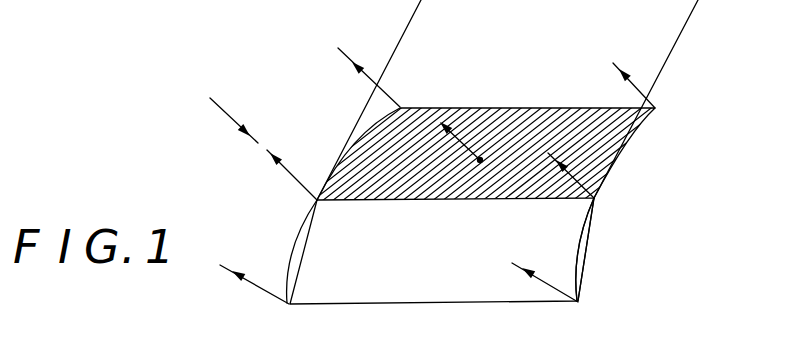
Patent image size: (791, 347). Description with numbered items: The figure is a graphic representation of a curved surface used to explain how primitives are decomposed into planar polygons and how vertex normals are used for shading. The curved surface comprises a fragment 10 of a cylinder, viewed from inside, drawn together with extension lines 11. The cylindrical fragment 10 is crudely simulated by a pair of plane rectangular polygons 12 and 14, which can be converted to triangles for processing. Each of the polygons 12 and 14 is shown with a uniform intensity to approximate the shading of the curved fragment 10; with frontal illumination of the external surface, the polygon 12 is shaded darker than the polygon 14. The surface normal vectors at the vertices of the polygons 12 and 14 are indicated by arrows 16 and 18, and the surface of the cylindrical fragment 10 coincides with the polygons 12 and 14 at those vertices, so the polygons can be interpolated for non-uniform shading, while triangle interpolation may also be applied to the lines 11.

The fragment of a cylinder 10 is at (509, 100).
The extension lines 11 is at (409, 28).
The plane rectangular polygon 12 is at (645, 144).
The plane rectangular polygon 14 is at (592, 278).
The arrows 16 is at (380, 84).
The arrows 18 is at (627, 70).